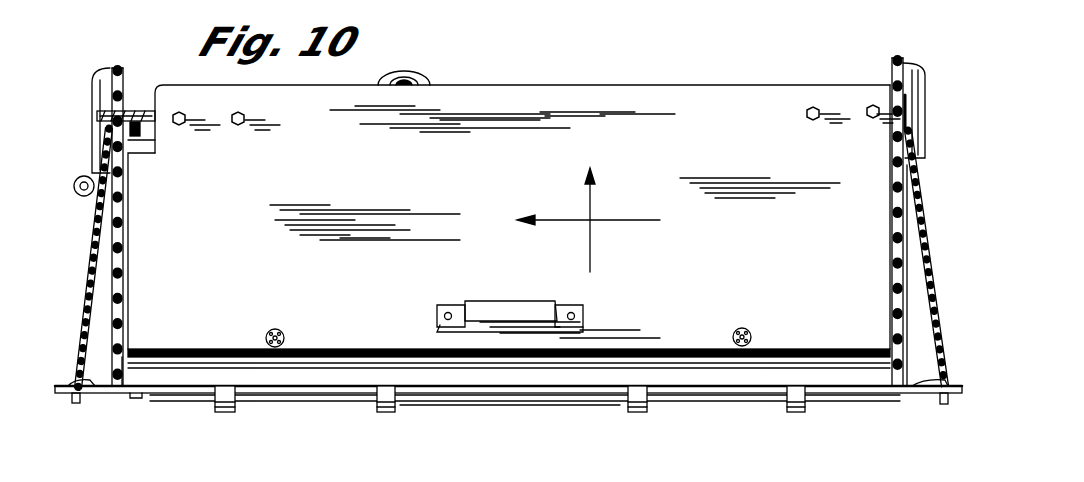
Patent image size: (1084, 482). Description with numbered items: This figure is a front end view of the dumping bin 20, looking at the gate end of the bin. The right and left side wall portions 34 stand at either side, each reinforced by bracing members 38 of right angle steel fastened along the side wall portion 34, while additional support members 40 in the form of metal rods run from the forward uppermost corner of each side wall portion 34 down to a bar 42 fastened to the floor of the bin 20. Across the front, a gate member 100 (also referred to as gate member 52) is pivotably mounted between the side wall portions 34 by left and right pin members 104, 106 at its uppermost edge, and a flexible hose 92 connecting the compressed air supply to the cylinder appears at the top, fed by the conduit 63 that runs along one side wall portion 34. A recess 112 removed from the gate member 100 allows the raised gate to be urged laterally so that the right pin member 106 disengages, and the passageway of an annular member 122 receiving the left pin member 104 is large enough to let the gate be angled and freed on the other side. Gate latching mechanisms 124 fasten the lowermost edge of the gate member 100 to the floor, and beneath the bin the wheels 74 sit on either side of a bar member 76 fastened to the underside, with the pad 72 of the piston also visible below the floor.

The dumping bin 20 is at (607, 72).
The side wall portion 34 is at (113, 68).
The bracing member 38 is at (95, 80).
The additional support member 40 is at (90, 250).
The bar 42 is at (92, 393).
The gate member 52 is at (850, 218).
The conduit 63 is at (83, 178).
The pad 72 is at (523, 400).
The wheels 74 is at (378, 407).
The bar member 76 is at (463, 398).
The flexible hose 92 is at (415, 73).
The gate member 100 is at (720, 92).
The left pin member 104 is at (142, 110).
The right pin member 106 is at (910, 105).
The recess 112 is at (143, 138).
The annular member 122 is at (123, 127).
The gate latching mechanism 124 is at (285, 335).